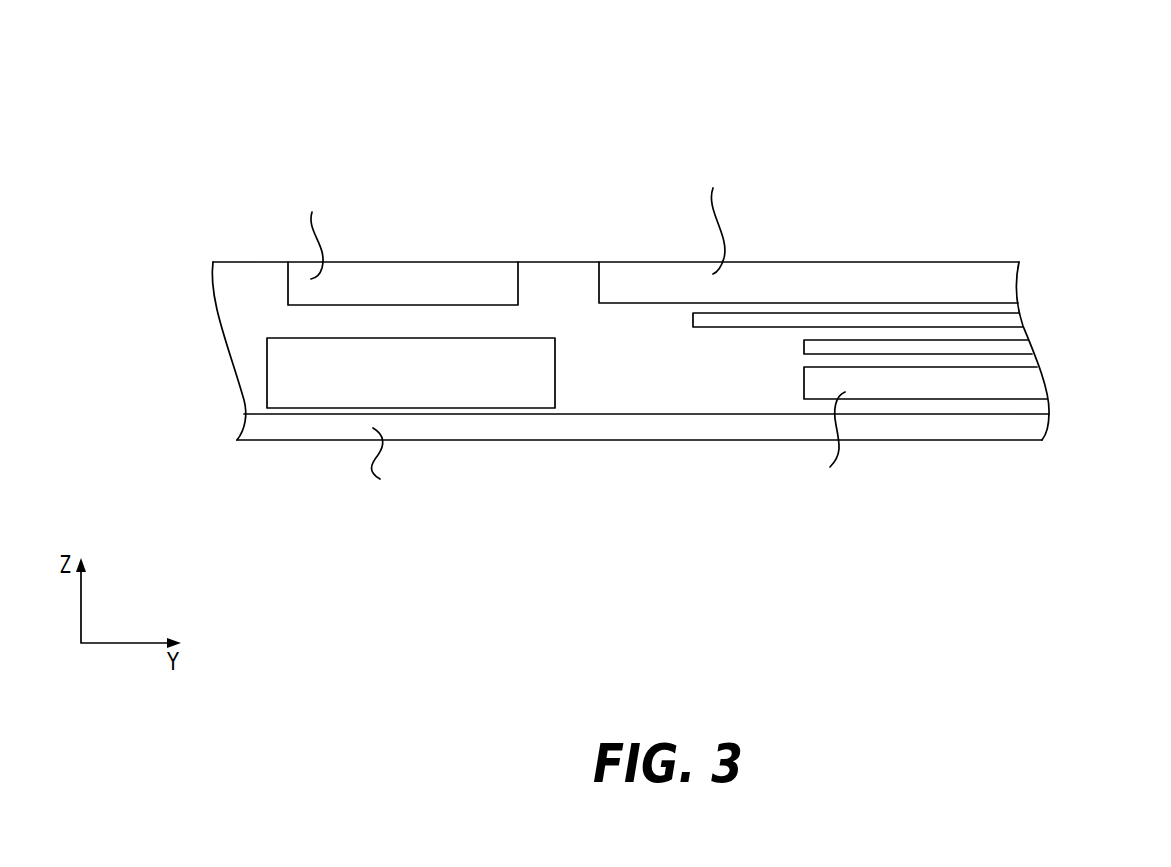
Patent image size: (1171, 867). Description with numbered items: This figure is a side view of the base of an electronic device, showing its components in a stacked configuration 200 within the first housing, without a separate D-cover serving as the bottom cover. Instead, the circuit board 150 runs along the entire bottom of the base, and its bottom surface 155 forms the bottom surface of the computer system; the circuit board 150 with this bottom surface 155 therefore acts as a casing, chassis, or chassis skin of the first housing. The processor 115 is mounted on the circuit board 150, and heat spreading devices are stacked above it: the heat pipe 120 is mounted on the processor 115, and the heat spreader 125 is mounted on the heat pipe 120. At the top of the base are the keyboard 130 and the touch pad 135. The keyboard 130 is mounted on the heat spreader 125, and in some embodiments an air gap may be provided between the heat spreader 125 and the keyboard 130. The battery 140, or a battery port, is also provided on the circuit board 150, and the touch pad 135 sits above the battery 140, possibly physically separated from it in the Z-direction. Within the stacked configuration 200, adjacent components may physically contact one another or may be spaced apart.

The stacked configuration 200 is at (274, 98).
The touch pad 135 is at (487, 279).
The keyboard 130 is at (974, 274).
The heat spreader 125 is at (1012, 320).
The heat pipe 120 is at (1013, 347).
The processor 115 is at (1025, 382).
The circuit board 150 is at (1025, 425).
The bottom surface 155 is at (1010, 440).
The battery 140 is at (275, 380).